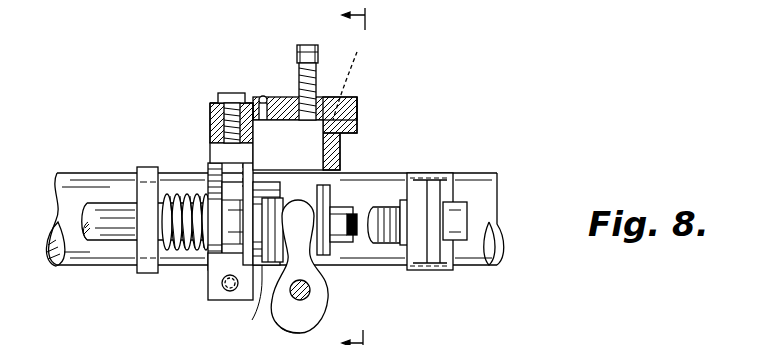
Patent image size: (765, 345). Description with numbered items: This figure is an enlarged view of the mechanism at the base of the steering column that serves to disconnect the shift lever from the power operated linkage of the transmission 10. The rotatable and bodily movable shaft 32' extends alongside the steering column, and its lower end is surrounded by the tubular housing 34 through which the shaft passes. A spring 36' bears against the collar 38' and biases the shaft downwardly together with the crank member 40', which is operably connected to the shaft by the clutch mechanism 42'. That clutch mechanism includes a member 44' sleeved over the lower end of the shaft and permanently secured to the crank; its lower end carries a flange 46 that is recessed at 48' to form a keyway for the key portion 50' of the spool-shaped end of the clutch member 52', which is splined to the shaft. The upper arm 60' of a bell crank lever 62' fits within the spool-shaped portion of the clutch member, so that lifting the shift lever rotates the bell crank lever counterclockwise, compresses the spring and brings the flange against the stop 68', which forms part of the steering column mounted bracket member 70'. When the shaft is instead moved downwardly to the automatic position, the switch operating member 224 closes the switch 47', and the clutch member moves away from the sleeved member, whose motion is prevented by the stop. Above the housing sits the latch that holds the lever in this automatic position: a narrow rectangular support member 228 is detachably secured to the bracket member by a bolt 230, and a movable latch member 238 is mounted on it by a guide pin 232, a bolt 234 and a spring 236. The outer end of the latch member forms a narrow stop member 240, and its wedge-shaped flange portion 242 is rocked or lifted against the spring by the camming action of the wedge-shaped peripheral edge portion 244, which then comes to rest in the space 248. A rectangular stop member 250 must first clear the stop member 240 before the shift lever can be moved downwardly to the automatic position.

The transmission 10 is at (365, 176).
The shaft 32' is at (132, 215).
The tube housing 34 is at (490, 178).
The spring 36' is at (174, 247).
The collar 38' is at (131, 210).
The crank member 40' is at (193, 209).
The clutch mechanism 42' is at (230, 290).
The member 44' is at (212, 230).
The flange 46 is at (262, 166).
The switch 47' is at (417, 210).
The recess 48' is at (287, 204).
The key portion 50' is at (313, 207).
The clutch member 52' is at (246, 300).
The upper arm 60' is at (315, 266).
The bell crank lever 62' is at (319, 317).
The stop 68' is at (260, 205).
The bracket member 70' is at (209, 133).
The switch operating member 224 is at (348, 210).
The support member 228 is at (211, 110).
The bolt 230 is at (218, 97).
The guide pin 232 is at (262, 96).
The bolt 234 is at (299, 75).
The spring 236 is at (298, 55).
The latch member 238 is at (350, 45).
The stop member 240 is at (358, 108).
The wedge-shaped flange portion 242 is at (341, 115).
The wedge-shaped peripheral edge portion 244 is at (323, 135).
The space 248 is at (357, 128).
The stop member 250 is at (342, 146).